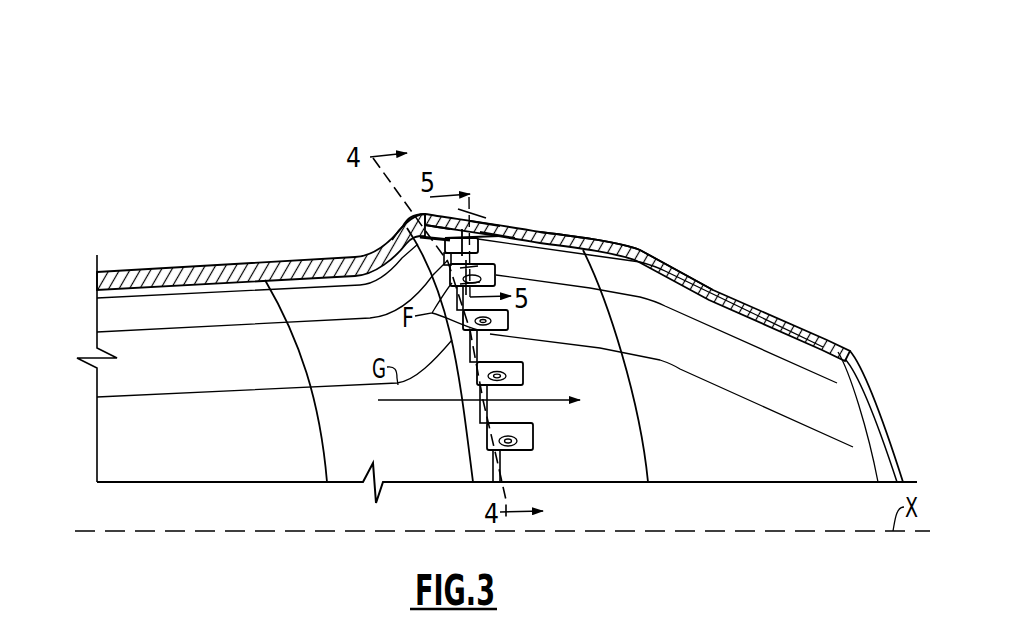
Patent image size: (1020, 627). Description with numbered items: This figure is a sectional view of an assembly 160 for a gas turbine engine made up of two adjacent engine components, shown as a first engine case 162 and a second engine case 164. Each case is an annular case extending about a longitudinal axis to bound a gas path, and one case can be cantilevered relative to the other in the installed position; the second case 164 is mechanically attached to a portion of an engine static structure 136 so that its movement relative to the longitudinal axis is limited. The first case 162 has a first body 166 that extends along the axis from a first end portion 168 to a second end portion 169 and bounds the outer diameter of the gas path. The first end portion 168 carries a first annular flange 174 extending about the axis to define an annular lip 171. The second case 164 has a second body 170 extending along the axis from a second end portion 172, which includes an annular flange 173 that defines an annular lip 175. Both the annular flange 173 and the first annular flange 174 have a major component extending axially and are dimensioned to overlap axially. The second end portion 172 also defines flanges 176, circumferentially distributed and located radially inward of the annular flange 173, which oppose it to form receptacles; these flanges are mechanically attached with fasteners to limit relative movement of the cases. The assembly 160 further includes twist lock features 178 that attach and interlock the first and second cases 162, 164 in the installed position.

The engine static structure 136 is at (97, 323).
The assembly 160 is at (337, 166).
The first engine case 162 is at (579, 224).
The second engine case 164 is at (252, 256).
The first body 166 is at (598, 234).
The first end portion 168 is at (470, 211).
The second end portion 169 is at (832, 343).
The second body 170 is at (277, 261).
The annular lip 171 is at (409, 231).
The second end portion 172 is at (410, 216).
The annular flange 173 is at (480, 214).
The first annular flange 174 is at (472, 208).
The annular lip 175 is at (487, 217).
The flanges 176 is at (496, 279).
The twist lock features 178 is at (492, 335).